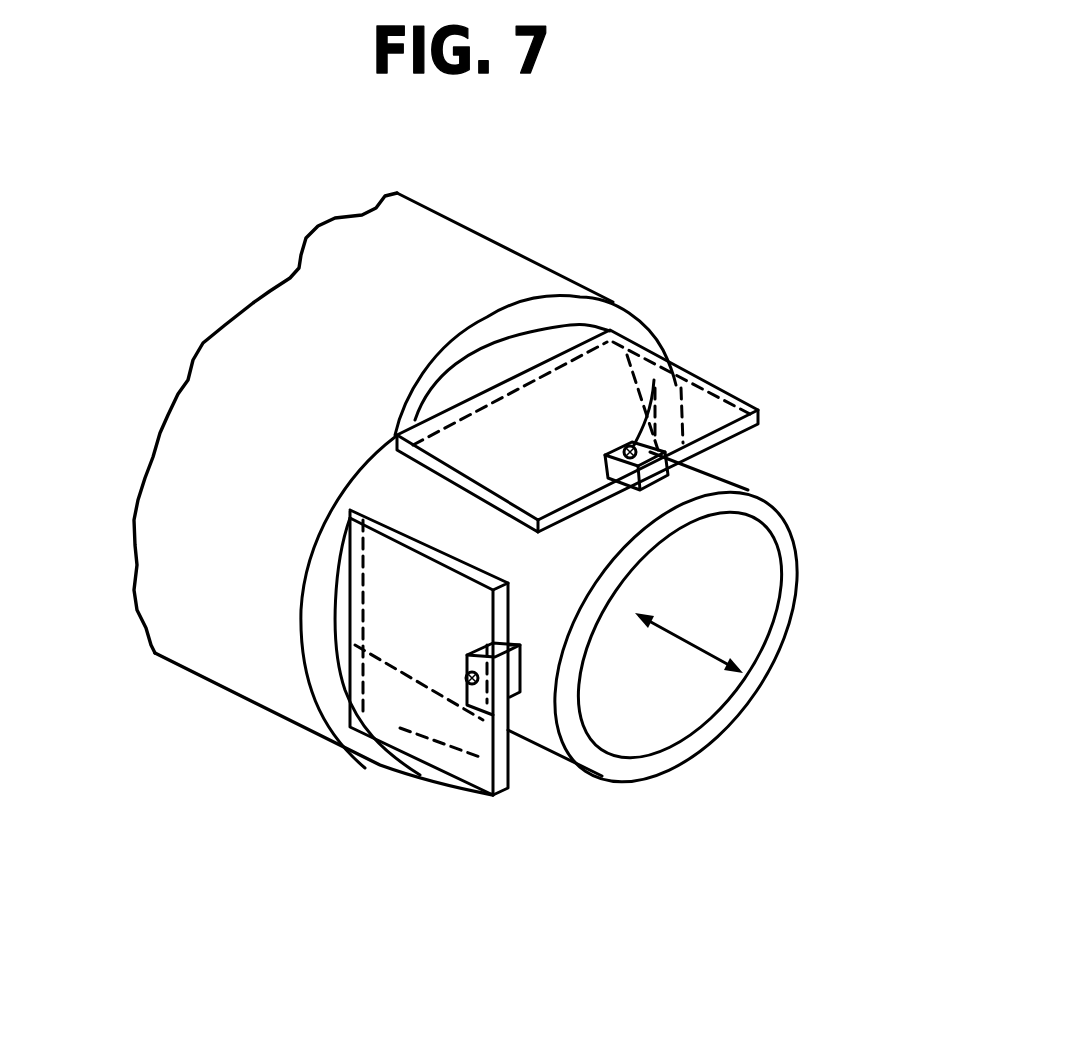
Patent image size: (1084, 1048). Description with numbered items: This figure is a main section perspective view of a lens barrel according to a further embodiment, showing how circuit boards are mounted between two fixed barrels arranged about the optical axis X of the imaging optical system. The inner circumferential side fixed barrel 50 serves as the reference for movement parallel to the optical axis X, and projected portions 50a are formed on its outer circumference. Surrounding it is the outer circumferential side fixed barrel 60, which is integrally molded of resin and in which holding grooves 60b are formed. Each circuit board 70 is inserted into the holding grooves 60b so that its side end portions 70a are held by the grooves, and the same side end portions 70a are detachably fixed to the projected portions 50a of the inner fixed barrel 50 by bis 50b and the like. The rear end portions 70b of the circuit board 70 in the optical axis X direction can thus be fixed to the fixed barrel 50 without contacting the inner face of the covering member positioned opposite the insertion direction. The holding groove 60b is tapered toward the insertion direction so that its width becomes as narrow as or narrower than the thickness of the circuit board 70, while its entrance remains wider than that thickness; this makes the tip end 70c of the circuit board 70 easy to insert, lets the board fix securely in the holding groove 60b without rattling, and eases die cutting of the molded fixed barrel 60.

The inner circumferential side fixed barrel 50 is at (697, 473).
The projected portions 50a is at (675, 483).
The bis 50b is at (717, 412).
The outer circumferential side fixed barrel 60 is at (555, 250).
The holding grooves 60b is at (600, 325).
The circuit board 70 is at (755, 383).
The side end portions 70a is at (615, 328).
The rear end portions 70b is at (730, 430).
The tip end 70c is at (470, 363).
The optical axis X is at (683, 637).